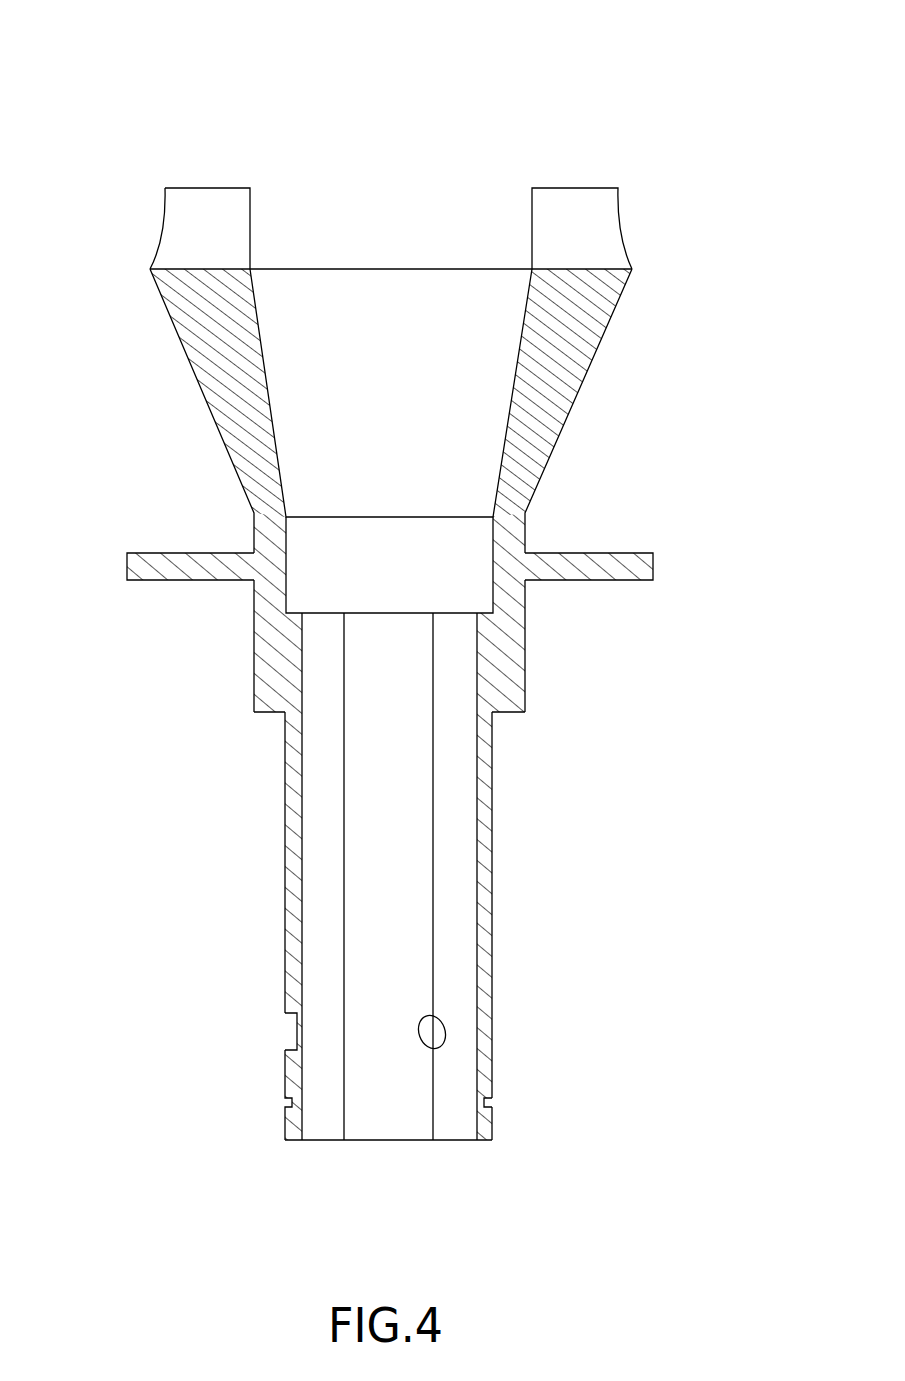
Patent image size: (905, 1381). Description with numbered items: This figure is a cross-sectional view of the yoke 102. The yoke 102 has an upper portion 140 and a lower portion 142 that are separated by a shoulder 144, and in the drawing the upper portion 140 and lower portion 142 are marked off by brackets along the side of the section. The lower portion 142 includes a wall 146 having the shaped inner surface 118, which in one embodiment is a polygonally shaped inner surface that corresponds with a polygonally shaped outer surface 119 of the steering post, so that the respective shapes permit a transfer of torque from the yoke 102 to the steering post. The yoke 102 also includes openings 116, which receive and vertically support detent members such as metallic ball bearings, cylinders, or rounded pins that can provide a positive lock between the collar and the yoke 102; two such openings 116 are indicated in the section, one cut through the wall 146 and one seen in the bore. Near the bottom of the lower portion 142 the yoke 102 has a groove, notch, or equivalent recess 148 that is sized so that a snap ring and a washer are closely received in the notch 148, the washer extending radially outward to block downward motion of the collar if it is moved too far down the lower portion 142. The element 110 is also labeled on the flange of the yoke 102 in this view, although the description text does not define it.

The yoke 102 is at (153, 62).
The flange 110 is at (183, 553).
The openings 116 is at (292, 1028).
The shaped inner surface 118 is at (320, 825).
The polygonally shaped outer surface 119 is at (477, 893).
The upper portion 140 is at (705, 187).
The lower portion 142 is at (702, 707).
The shoulder 144 is at (265, 713).
The wall 146 is at (283, 883).
The notch 148 is at (487, 1103).